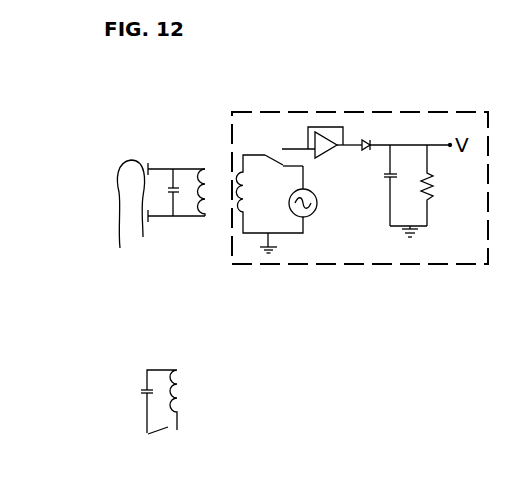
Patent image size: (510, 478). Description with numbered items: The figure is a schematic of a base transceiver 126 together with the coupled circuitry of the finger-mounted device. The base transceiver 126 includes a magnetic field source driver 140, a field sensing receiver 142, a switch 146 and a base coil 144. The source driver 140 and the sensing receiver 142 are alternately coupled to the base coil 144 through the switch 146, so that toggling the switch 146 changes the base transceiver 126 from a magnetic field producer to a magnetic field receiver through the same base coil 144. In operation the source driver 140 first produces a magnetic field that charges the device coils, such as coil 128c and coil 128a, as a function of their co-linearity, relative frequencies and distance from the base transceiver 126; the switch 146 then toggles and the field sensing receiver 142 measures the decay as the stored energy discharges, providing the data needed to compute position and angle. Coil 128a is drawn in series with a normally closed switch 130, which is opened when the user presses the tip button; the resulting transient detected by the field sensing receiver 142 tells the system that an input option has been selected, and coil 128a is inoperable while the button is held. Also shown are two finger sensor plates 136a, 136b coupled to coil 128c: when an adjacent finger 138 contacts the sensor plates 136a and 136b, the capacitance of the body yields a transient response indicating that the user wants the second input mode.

The adjacent finger 138 is at (118, 178).
The finger sensor plate 136a is at (157, 160).
The finger sensor plate 136b is at (155, 253).
The coil 128c is at (205, 166).
The base transceiver 126 is at (343, 265).
The base coil 144 is at (240, 212).
The magnetic field source driver 140 is at (306, 218).
The switch 146 is at (270, 152).
The field sensing receiver 142 is at (400, 150).
The coil 128a is at (181, 373).
The normally closed switch 130 is at (165, 436).